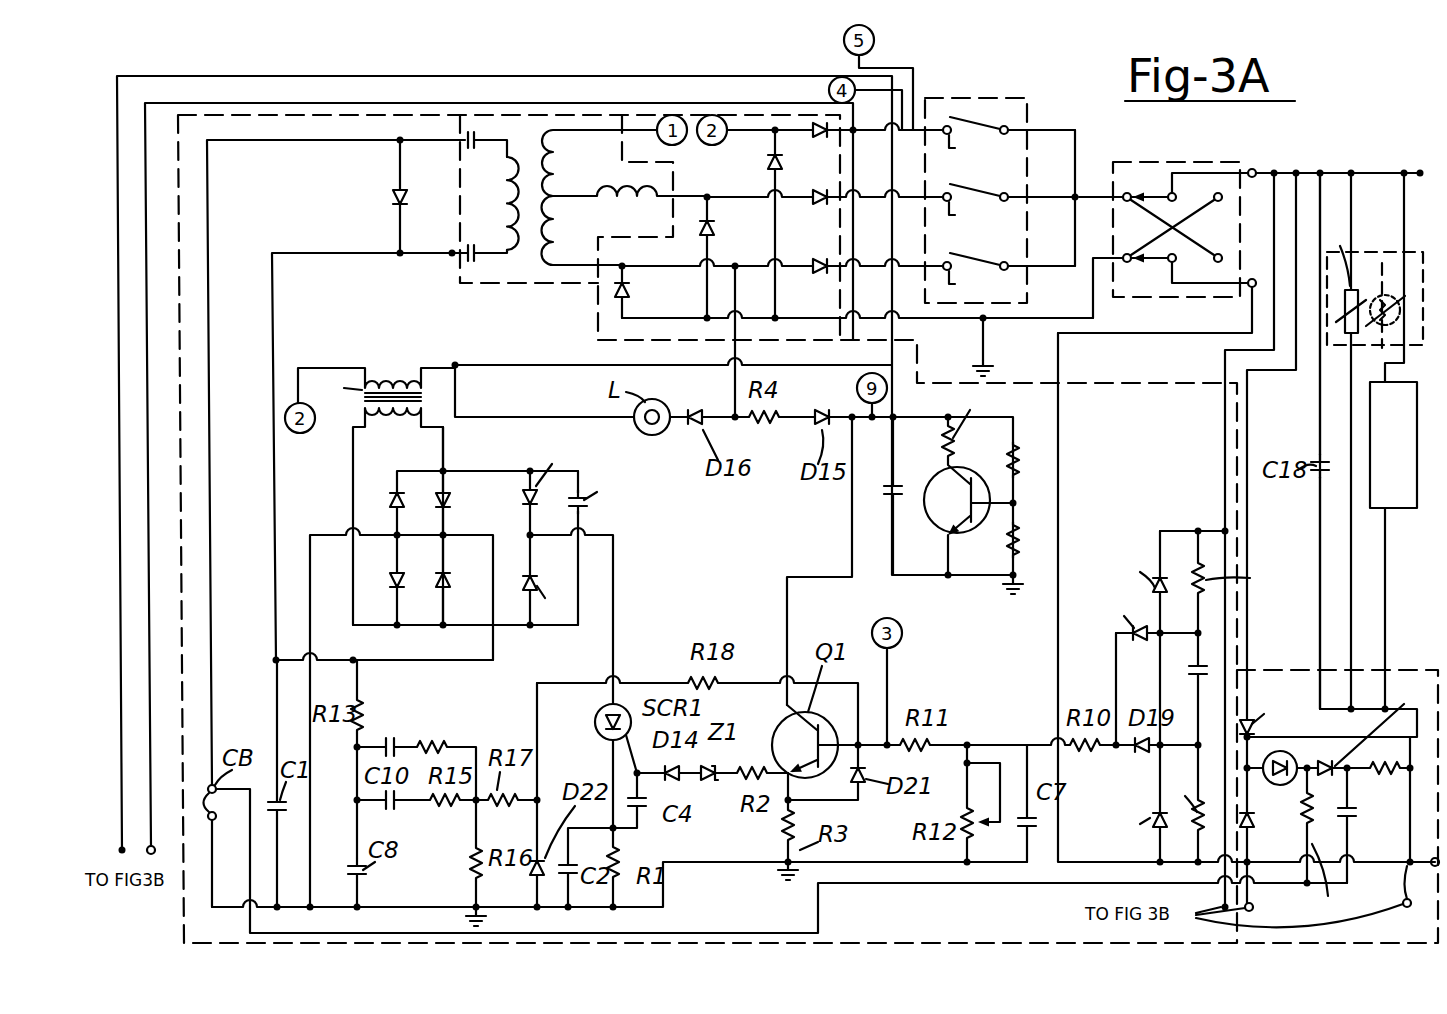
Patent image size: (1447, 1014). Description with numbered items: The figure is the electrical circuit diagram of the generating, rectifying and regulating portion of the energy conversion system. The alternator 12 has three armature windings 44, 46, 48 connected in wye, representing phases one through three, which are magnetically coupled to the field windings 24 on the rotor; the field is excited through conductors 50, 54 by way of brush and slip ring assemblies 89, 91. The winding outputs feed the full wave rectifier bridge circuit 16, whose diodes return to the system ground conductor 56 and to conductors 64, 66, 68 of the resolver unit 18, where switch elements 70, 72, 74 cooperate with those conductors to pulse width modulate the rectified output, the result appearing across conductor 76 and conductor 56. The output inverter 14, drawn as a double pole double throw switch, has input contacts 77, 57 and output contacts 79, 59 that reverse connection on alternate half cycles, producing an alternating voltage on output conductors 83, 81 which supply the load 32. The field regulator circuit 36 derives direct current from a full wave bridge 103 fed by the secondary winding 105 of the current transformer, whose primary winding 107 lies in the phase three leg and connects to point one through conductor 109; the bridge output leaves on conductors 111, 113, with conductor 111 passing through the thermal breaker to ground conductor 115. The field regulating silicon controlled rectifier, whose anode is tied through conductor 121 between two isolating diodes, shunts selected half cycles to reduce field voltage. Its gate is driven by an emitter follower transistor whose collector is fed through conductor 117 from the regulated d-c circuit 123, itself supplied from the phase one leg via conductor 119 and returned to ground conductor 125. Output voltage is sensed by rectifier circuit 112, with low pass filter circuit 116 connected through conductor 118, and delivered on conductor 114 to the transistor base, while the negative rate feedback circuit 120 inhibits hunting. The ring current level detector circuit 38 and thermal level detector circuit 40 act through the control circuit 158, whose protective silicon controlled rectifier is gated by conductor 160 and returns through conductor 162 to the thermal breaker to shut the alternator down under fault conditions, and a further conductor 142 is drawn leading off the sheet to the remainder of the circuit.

The alternator 12 is at (495, 227).
The output inverter 14 is at (1157, 230).
The full wave rectifier bridge circuit 16 is at (706, 110).
The resolver unit 18 is at (1017, 172).
The field windings 24 is at (504, 196).
The load 32 is at (1376, 480).
The field regulator circuit 36 is at (200, 110).
The ring current level detector circuit 38 is at (1397, 660).
The thermal level detector circuit 40 is at (1338, 354).
The armature winding 44 is at (582, 230).
The armature winding 46 is at (630, 210).
The armature winding 48 is at (566, 178).
The conductor 50 is at (240, 143).
The conductor 54 is at (290, 253).
The system ground conductor 56 is at (962, 346).
The input contact 57 is at (1192, 226).
The output contact 59 is at (1157, 297).
The conductor 64 is at (945, 264).
The conductor 66 is at (903, 197).
The conductor 68 is at (946, 126).
The switch element 70 is at (1009, 278).
The switch element 72 is at (1009, 209).
The switch element 74 is at (1009, 142).
The conductor 76 is at (1098, 194).
The input contact 77 is at (1165, 227).
The output contact 79 is at (1200, 166).
The output conductor 81 is at (1190, 336).
The output conductor 83 is at (1262, 170).
The brush and slip ring assembly 89 is at (484, 144).
The brush and slip ring assembly 91 is at (484, 254).
The full wave bridge 103 is at (415, 452).
The secondary winding 105 is at (360, 418).
The primary winding 107 is at (388, 374).
The conductor 109 is at (122, 702).
The conductor 111 is at (328, 535).
The rectifier circuit 112 is at (1134, 540).
The conductor 113 is at (407, 666).
The conductor 114 is at (1118, 756).
The system ground conductor 115 is at (398, 907).
The low pass filter circuit 116 is at (1189, 520).
The conductor 117 is at (786, 602).
The conductor 118 is at (1222, 434).
The conductor 119 is at (742, 354).
The negative rate feedback circuit 120 is at (484, 708).
The conductor 121 is at (620, 534).
The regulated d-c circuit 123 is at (920, 440).
The ground conductor 125 is at (913, 580).
The supply conductor to FIG 3B 142 is at (560, 103).
The control circuit 158 is at (1310, 664).
The conductor 160 is at (1425, 902).
The conductor 162 is at (920, 886).